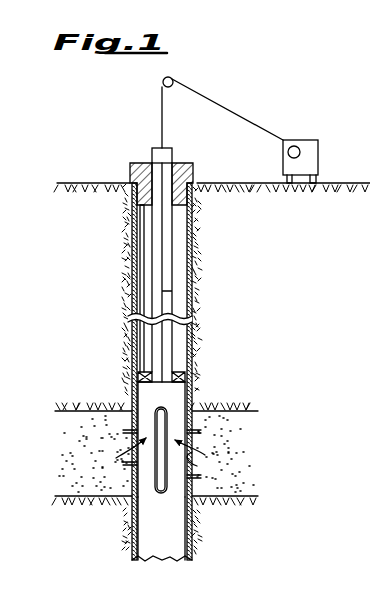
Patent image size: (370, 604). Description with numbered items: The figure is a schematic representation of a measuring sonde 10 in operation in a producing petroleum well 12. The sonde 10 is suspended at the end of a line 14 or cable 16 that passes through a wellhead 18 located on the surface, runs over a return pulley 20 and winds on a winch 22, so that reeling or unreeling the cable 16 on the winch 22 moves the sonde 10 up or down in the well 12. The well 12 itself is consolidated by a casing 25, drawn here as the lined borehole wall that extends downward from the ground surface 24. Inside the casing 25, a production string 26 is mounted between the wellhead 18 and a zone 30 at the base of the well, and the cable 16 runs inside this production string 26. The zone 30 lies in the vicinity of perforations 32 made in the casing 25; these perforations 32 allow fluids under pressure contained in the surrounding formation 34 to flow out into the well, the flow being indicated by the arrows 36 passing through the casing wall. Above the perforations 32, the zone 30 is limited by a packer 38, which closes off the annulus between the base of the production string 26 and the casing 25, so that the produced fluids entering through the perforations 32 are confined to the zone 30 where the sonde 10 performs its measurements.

The measuring sonde 10 is at (186, 403).
The producing petroleum well 12 is at (178, 537).
The line 14 is at (186, 382).
The cable 16 is at (168, 292).
The wellhead 18 is at (137, 160).
The return pulley 20 is at (173, 78).
The winch 22 is at (294, 149).
The ground surface 24 is at (340, 183).
The casing 25 is at (195, 263).
The production string 26 is at (143, 253).
The zone 30 is at (138, 397).
The perforations 32 is at (128, 474).
The formation 34 is at (84, 463).
The arrows 36 is at (195, 466).
The packer 38 is at (132, 357).